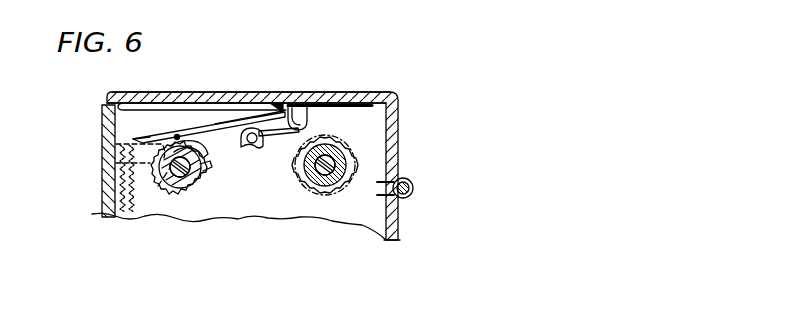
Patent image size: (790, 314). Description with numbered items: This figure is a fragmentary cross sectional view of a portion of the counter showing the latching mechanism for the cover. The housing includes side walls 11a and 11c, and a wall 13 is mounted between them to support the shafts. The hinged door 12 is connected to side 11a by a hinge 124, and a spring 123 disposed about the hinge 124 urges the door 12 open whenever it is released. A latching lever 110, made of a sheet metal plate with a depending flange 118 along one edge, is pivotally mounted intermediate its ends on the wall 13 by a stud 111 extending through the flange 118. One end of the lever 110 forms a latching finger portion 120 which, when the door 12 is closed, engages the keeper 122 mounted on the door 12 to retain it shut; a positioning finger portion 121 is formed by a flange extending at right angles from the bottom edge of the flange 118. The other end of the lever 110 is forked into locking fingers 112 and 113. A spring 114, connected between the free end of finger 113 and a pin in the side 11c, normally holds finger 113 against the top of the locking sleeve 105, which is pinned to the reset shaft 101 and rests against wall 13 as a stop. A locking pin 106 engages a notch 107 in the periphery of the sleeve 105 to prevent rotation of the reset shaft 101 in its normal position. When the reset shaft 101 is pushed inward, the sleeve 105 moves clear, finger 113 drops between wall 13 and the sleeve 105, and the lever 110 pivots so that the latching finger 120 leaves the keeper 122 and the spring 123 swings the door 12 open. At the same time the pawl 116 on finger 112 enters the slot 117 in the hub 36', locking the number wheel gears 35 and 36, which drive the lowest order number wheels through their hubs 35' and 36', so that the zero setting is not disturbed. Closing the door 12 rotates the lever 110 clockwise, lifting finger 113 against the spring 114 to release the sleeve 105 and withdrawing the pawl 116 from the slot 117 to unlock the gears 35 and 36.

The side wall 11a is at (398, 238).
The side wall 11c is at (105, 208).
The hinged door 12 is at (364, 100).
The wall 13 is at (373, 162).
The number wheel gear 35 is at (325, 195).
The hub 35' is at (310, 205).
The number wheel gear 36 is at (184, 197).
The hub 36' is at (176, 205).
The reset shaft 101 is at (203, 170).
The locking sleeve 105 is at (100, 147).
The locking pin 106 is at (110, 166).
The notch 107 is at (158, 186).
The latching lever 110 is at (226, 128).
The stud 111 is at (253, 145).
The locking finger 112 is at (190, 128).
The locking finger 113 is at (155, 135).
The spring 114 is at (104, 189).
The pawl 116 is at (180, 135).
The slot 117 is at (203, 154).
The depending flange 118 is at (274, 120).
The latching finger portion 120 is at (281, 117).
The positioning finger portion 121 is at (276, 140).
The keeper 122 is at (300, 112).
The spring 123 is at (408, 183).
The hinge 124 is at (413, 188).